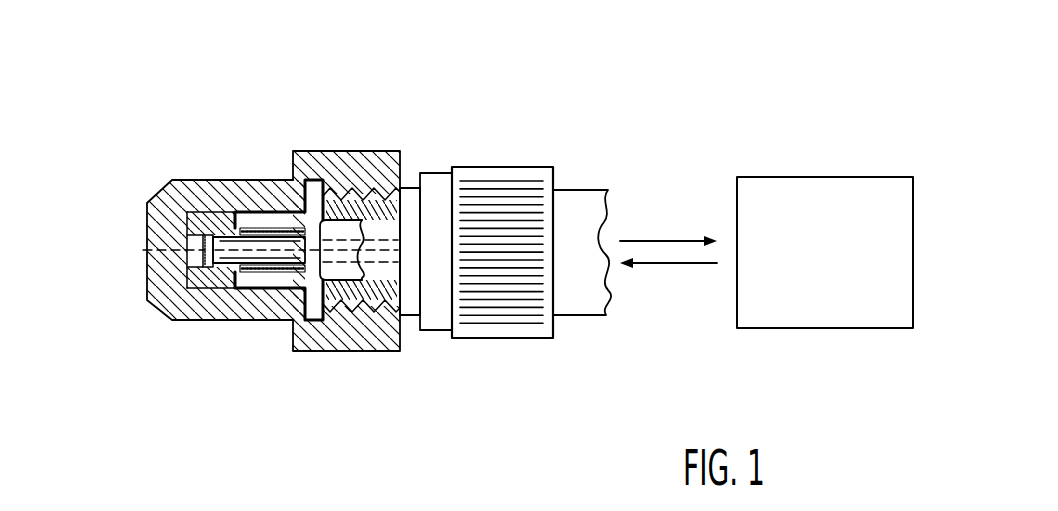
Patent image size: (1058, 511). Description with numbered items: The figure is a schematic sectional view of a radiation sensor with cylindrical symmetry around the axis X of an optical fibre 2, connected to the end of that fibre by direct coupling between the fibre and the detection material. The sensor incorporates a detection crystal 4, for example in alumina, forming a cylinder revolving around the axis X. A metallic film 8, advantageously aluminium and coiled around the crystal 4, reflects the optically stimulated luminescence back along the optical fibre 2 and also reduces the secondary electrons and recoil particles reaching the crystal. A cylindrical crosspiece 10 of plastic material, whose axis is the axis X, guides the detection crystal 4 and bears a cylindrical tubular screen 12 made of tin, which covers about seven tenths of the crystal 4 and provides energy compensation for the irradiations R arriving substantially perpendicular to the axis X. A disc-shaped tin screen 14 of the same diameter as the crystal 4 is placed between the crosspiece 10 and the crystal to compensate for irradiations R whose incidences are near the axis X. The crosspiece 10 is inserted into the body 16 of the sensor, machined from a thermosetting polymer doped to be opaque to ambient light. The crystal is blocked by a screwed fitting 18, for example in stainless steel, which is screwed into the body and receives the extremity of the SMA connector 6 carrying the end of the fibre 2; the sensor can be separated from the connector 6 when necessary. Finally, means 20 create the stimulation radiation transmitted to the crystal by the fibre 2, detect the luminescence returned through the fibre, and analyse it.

The optical fibre 2 is at (382, 253).
The detection crystal 4 is at (220, 288).
The connector 6 is at (533, 184).
The metallic film 8 is at (228, 220).
The cylindrical crosspiece 10 is at (195, 273).
The cylindrical tubular screen 12 is at (281, 228).
The tin screen 14 is at (206, 243).
The body 16 is at (365, 171).
The screwed fitting 18 is at (379, 325).
The means for stimulation, detection and analysis 20 is at (809, 186).
The axis X is at (263, 252).
The irradiations R is at (250, 136).